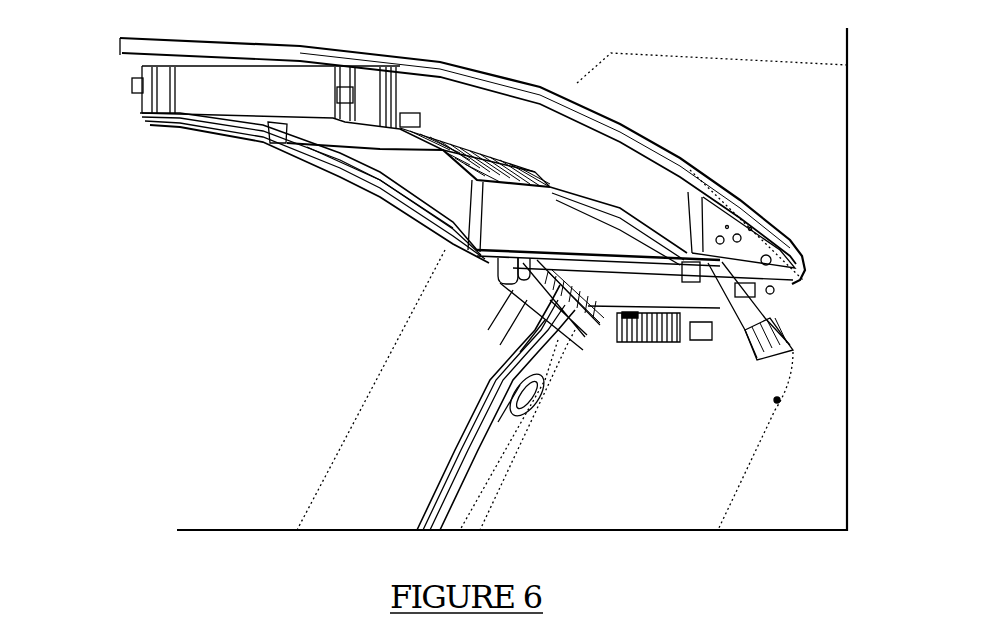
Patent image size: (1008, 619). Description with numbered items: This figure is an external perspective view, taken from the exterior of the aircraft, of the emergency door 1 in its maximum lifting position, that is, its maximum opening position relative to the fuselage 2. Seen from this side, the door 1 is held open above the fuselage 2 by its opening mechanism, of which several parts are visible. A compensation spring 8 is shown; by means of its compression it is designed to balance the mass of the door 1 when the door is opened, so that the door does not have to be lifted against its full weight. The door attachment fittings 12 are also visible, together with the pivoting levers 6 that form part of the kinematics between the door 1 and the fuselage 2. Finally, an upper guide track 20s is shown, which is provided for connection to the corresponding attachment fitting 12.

The emergency door 1 is at (130, 147).
The fuselage 2 is at (300, 411).
The pivoting levers 6 is at (710, 265).
The compensation spring 8 is at (637, 322).
The door attachment fittings 12 is at (740, 290).
The upper guide track 20s is at (528, 402).